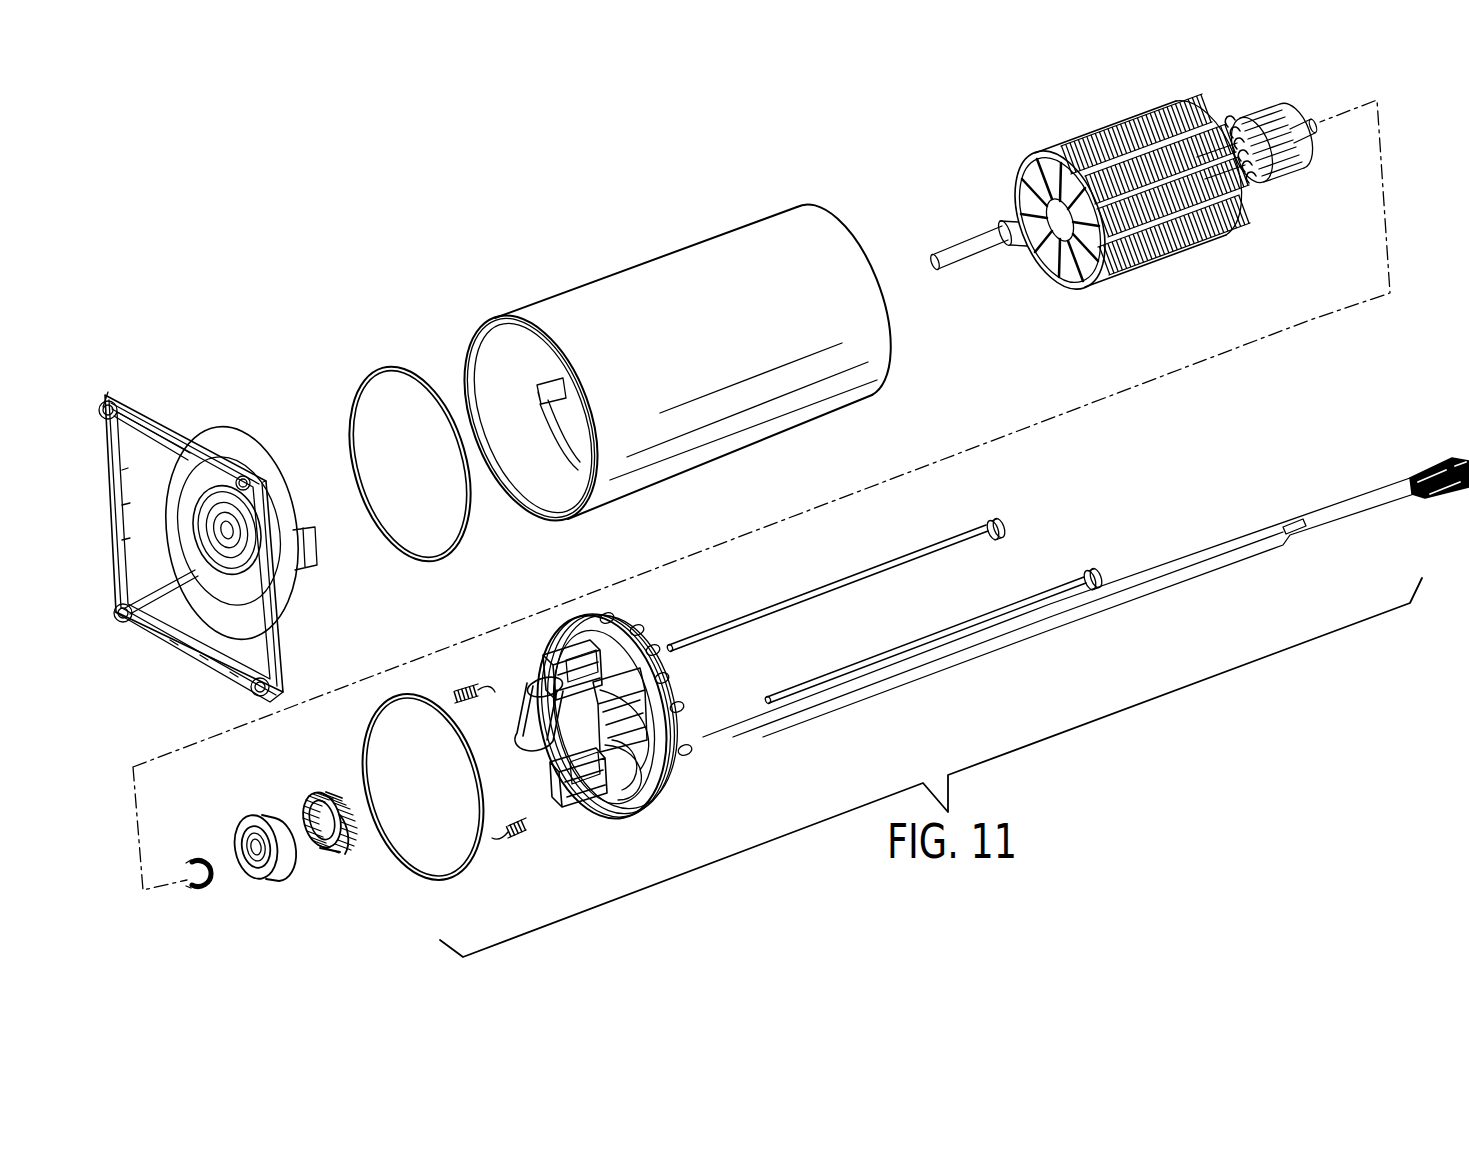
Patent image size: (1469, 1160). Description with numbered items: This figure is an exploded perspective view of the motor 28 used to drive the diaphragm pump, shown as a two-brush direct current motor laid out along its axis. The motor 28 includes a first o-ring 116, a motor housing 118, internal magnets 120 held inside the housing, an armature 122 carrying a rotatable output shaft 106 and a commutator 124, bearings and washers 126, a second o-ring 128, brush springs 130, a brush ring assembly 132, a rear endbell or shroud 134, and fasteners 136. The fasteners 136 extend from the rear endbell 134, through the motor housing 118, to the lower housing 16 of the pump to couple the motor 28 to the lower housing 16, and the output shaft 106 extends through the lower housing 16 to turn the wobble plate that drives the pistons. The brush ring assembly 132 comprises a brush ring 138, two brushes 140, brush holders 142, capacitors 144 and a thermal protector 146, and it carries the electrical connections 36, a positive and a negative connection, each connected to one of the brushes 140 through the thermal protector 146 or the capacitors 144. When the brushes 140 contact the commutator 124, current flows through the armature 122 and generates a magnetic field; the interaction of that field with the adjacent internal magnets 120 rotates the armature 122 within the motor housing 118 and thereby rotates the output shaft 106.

The motor 28 is at (541, 193).
The lower housing 16 is at (163, 412).
The electrical connectors 36 is at (1183, 577).
The output shaft 106 is at (958, 248).
The first o-ring 116 is at (355, 392).
The motor housing 118 is at (622, 290).
The internal magnets 120 is at (563, 413).
The armature 122 is at (1075, 137).
The commutator 124 is at (1285, 163).
The bearings and washers 126 is at (352, 785).
The second o-ring 128 is at (414, 867).
The brush springs 130 is at (460, 693).
The brush ring assembly 132 is at (662, 822).
The rear endbell 134 is at (617, 630).
The fasteners 136 is at (998, 505).
The brush ring 138 is at (660, 678).
The brushes 140 is at (552, 657).
The brush holders 142 is at (580, 662).
The capacitors 144 is at (545, 703).
The thermal protector 146 is at (653, 773).